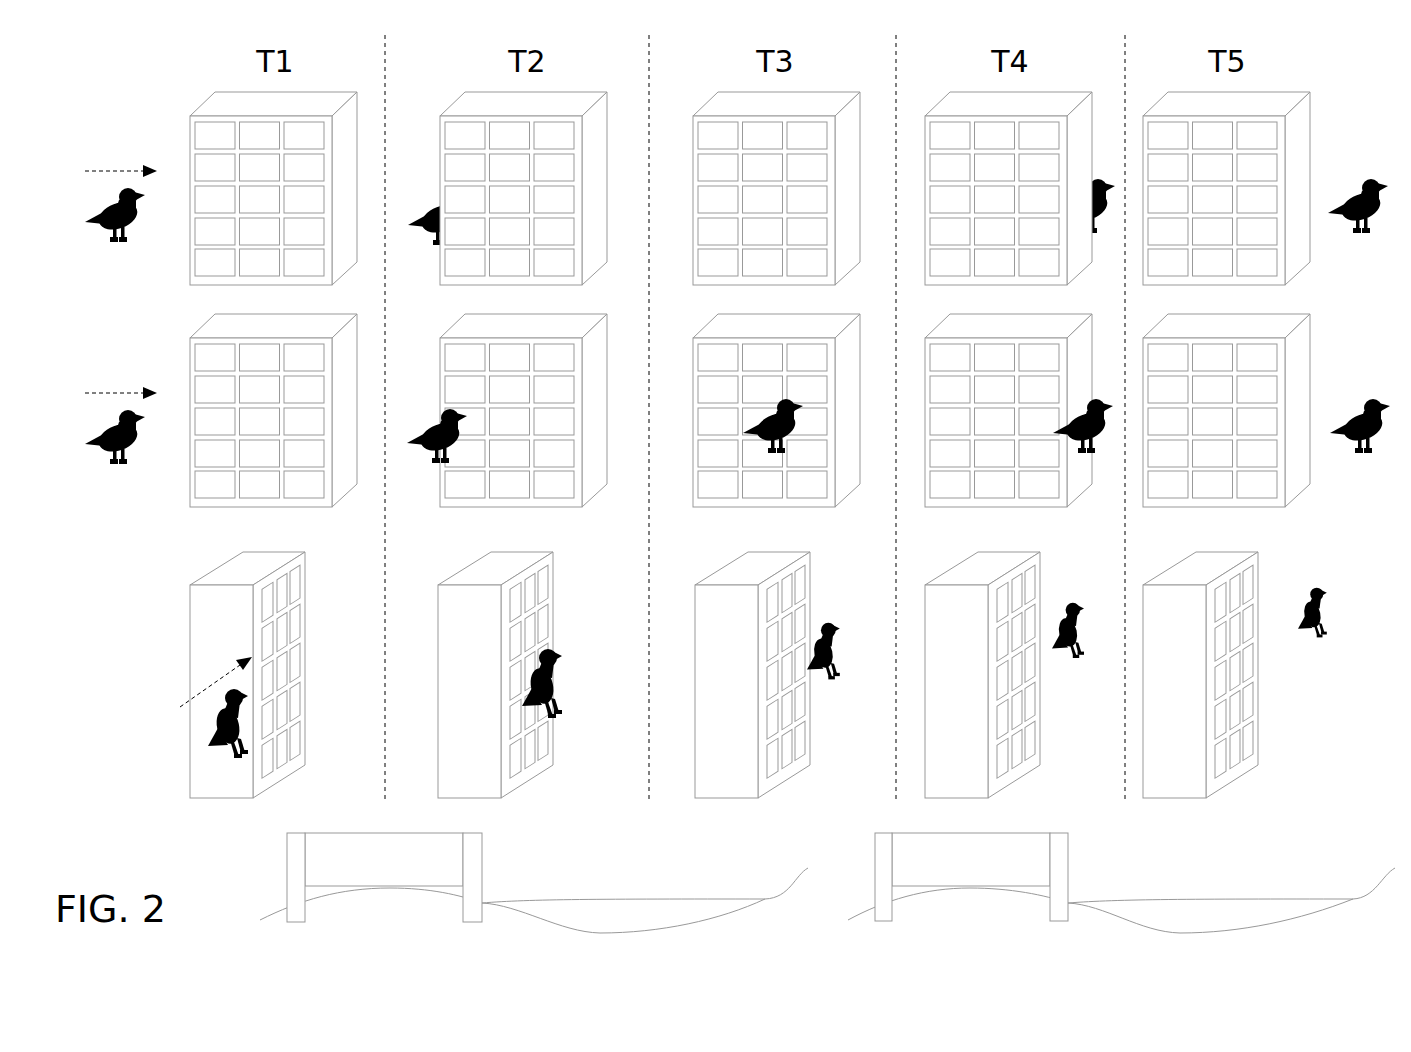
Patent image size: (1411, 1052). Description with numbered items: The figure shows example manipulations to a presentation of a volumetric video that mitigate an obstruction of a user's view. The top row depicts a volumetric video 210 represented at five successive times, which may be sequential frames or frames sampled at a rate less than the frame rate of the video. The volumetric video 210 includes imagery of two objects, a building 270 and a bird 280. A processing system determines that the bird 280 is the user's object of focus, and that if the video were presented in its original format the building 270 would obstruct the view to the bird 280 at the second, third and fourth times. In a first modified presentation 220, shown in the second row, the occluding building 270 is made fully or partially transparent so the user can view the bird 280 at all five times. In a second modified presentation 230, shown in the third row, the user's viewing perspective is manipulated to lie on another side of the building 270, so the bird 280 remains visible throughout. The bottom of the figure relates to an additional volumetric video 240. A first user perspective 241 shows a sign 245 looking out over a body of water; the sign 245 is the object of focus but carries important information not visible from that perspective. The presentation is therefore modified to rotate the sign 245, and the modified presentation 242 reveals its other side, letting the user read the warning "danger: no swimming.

The volumetric video 210 is at (165, 256).
The first modified presentation 220 is at (165, 478).
The second modified presentation 230 is at (165, 766).
The additional volumetric video 240 is at (252, 875).
The first user perspective 241 is at (588, 862).
The modified presentation 242 is at (1199, 862).
The sign 245 is at (287, 843).
The building 270 is at (190, 272).
The bird 280 is at (107, 205).